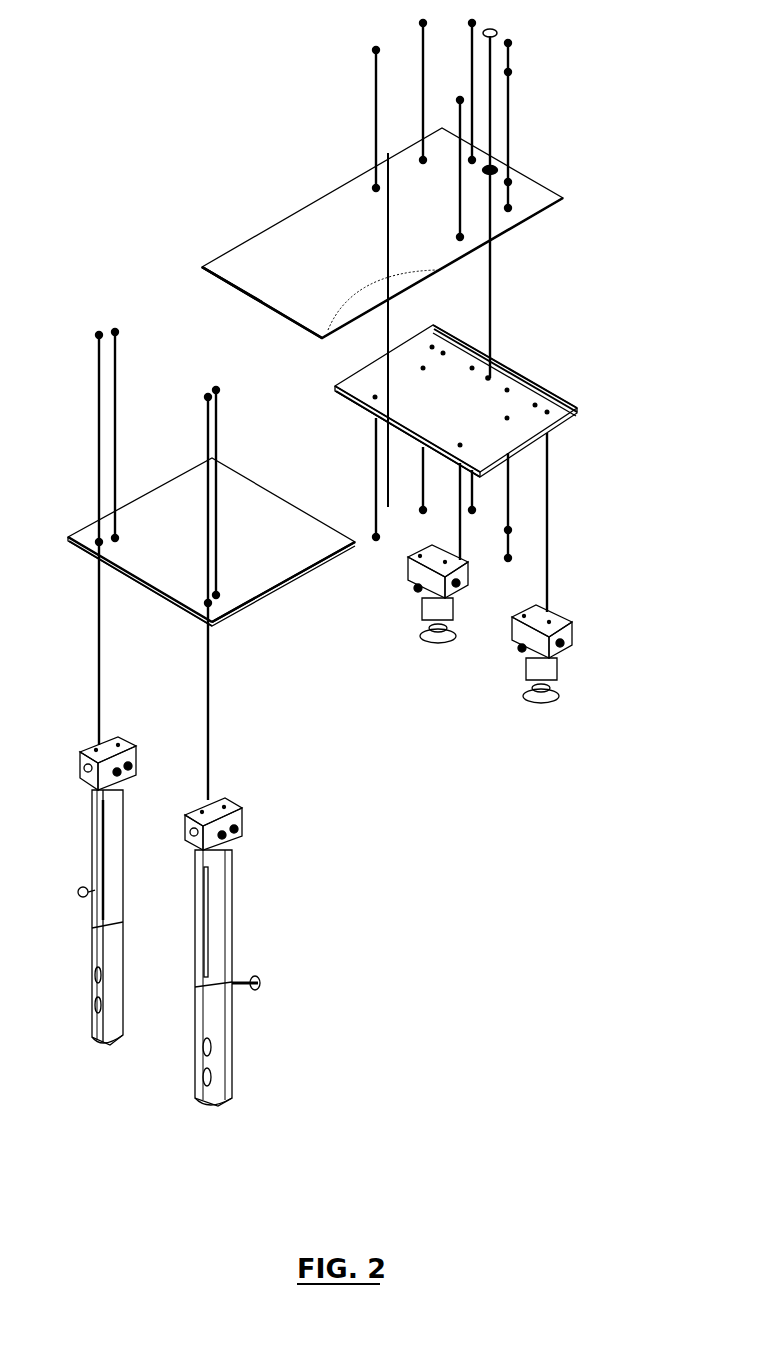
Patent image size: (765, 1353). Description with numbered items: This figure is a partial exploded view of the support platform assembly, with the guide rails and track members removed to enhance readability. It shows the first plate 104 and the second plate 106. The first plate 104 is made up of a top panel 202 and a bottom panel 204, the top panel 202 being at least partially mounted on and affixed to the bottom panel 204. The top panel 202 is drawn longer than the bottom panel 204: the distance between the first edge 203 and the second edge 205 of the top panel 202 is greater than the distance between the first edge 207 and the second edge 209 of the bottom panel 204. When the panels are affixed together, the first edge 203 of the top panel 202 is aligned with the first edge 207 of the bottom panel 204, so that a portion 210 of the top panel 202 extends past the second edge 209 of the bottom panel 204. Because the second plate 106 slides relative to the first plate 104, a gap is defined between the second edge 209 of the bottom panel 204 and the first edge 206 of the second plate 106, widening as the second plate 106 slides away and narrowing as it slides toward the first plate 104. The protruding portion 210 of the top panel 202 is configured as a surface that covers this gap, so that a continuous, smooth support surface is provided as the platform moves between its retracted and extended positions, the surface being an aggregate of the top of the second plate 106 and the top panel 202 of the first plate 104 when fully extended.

The first plate 104 is at (310, 298).
The second plate 106 is at (240, 583).
The top panel 202 is at (268, 257).
The first edge 203 is at (537, 177).
The bottom panel 204 is at (495, 403).
The second edge 205 is at (235, 293).
The first edge 206 is at (288, 505).
The first edge 207 is at (578, 415).
The second edge 209 is at (353, 400).
The portion 210 is at (372, 273).